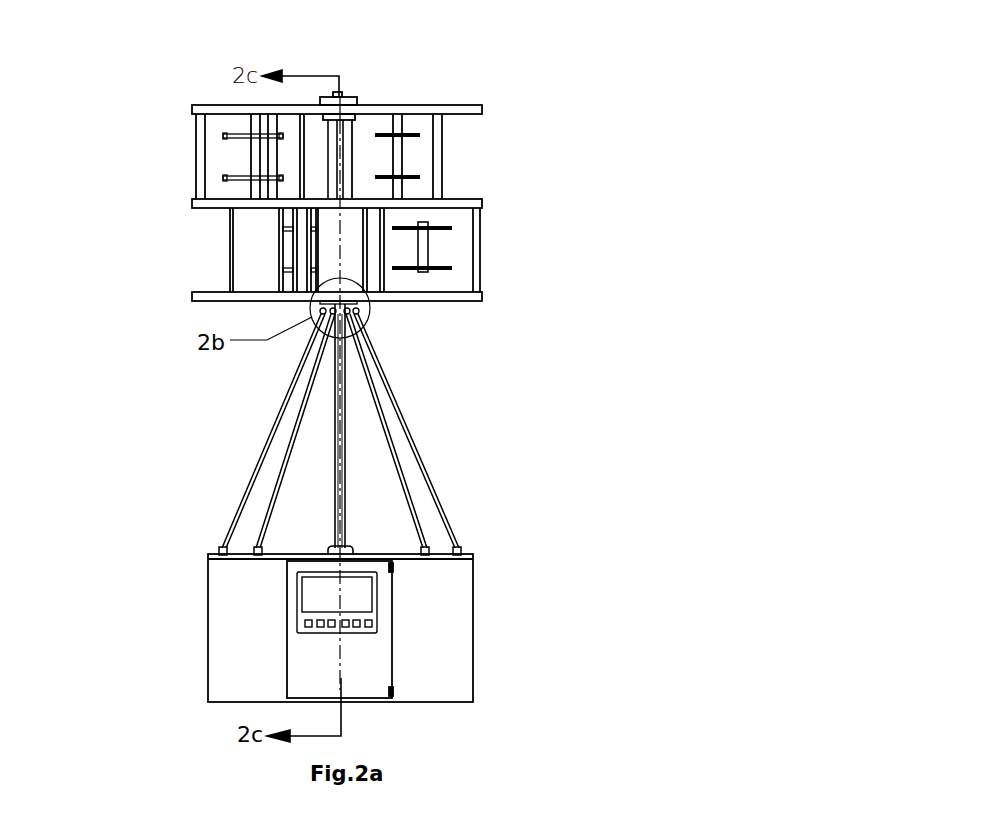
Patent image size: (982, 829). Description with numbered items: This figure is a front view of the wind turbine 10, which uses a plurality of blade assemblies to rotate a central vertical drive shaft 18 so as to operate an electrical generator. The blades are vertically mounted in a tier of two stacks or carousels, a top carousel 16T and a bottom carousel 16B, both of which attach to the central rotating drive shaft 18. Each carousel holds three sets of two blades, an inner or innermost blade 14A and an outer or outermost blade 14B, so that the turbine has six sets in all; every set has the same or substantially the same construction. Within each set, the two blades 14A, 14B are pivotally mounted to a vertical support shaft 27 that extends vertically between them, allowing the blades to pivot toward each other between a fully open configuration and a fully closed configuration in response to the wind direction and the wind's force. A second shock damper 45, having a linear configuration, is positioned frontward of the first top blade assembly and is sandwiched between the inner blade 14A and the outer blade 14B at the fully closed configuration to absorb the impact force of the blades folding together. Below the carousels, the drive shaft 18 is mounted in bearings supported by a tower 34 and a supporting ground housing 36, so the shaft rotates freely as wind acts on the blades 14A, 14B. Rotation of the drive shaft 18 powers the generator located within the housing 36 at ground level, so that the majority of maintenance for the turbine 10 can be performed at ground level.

The wind turbine 10 is at (650, 80).
The drive shaft 18 is at (485, 492).
The inner blade 14A is at (366, 140).
The outer blade 14B is at (422, 127).
The vertical support shaft 27 is at (402, 153).
The second shock damper 45 is at (485, 240).
The top carousel 16T is at (160, 172).
The bottom carousel 16B is at (170, 258).
The tower 34 is at (458, 407).
The supporting ground housing 36 is at (455, 657).